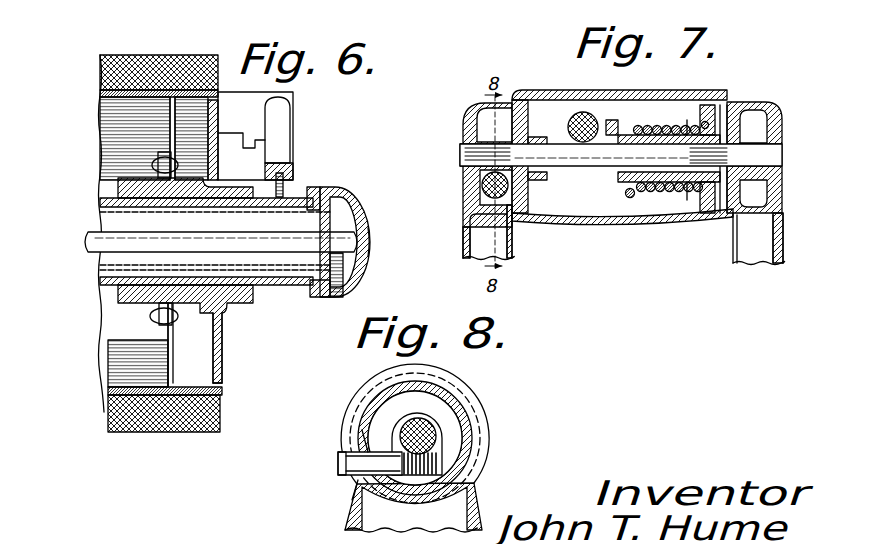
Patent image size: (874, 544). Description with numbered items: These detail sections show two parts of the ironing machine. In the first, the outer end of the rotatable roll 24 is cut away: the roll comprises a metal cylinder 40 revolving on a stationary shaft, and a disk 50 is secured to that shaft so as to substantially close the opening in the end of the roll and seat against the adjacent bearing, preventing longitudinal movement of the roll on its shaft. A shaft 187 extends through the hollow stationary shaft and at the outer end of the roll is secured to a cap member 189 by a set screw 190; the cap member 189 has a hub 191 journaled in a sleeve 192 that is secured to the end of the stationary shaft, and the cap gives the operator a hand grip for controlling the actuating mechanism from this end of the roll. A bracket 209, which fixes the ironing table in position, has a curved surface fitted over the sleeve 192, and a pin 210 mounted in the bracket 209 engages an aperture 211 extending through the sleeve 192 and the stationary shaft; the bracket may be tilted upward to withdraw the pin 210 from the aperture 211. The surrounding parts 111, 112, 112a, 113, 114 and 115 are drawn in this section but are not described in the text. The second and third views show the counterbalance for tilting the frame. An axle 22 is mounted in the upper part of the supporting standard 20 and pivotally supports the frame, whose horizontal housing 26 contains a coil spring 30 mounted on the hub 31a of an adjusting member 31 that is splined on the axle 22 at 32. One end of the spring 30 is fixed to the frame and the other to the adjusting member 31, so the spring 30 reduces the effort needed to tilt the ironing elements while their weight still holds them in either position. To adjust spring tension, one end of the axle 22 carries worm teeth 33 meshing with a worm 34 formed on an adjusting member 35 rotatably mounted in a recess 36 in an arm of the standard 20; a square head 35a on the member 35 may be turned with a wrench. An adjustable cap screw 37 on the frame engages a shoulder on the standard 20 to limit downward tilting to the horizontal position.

In FIG. 6, the rotatable roll 24 is at (122, 52).
In FIG. 6, the metal cylinder 40 is at (108, 377).
In FIG. 6, the disk 50 is at (222, 355).
In FIG. 6, the base bar 111 is at (122, 433).
In FIG. 6, the web 112 is at (168, 375).
In FIG. 6, the web 112a is at (197, 387).
In FIG. 6, the bolt 113 is at (150, 323).
In FIG. 6, the flange 114 is at (123, 290).
In FIG. 6, the flange 115 is at (100, 210).
In FIG. 6, the shaft 187 is at (123, 240).
In FIG. 6, the cap member 189 is at (370, 228).
In FIG. 6, the set screw 190 is at (340, 302).
In FIG. 6, the hub 191 is at (330, 196).
In FIG. 6, the sleeve 192 is at (313, 288).
In FIG. 6, the bracket 209 is at (280, 113).
In FIG. 6, the pin 210 is at (284, 192).
In FIG. 6, the aperture 211 is at (273, 213).
In FIG. 7, the supporting standard 20 is at (507, 263).
In FIG. 8, the supporting standard 20 is at (475, 503).
In FIG. 7, the axle 22 is at (582, 177).
In FIG. 8, the axle 22 is at (420, 420).
In FIG. 7, the horizontal housing 26 is at (557, 90).
In FIG. 7, the coil spring 30 is at (667, 187).
In FIG. 7, the adjusting member 31 is at (707, 207).
In FIG. 7, the hub 31a is at (623, 135).
In FIG. 7, the spline 32 is at (735, 140).
In FIG. 7, the worm teeth 33 is at (477, 117).
In FIG. 8, the worm teeth 33 is at (433, 433).
In FIG. 8, the worm 34 is at (437, 463).
In FIG. 8, the adjusting member 35 is at (355, 470).
In FIG. 8, the square head 35a is at (345, 462).
In FIG. 7, the recess 36 is at (480, 223).
In FIG. 8, the recess 36 is at (363, 447).
In FIG. 7, the adjustable cap screw 37 is at (481, 181).